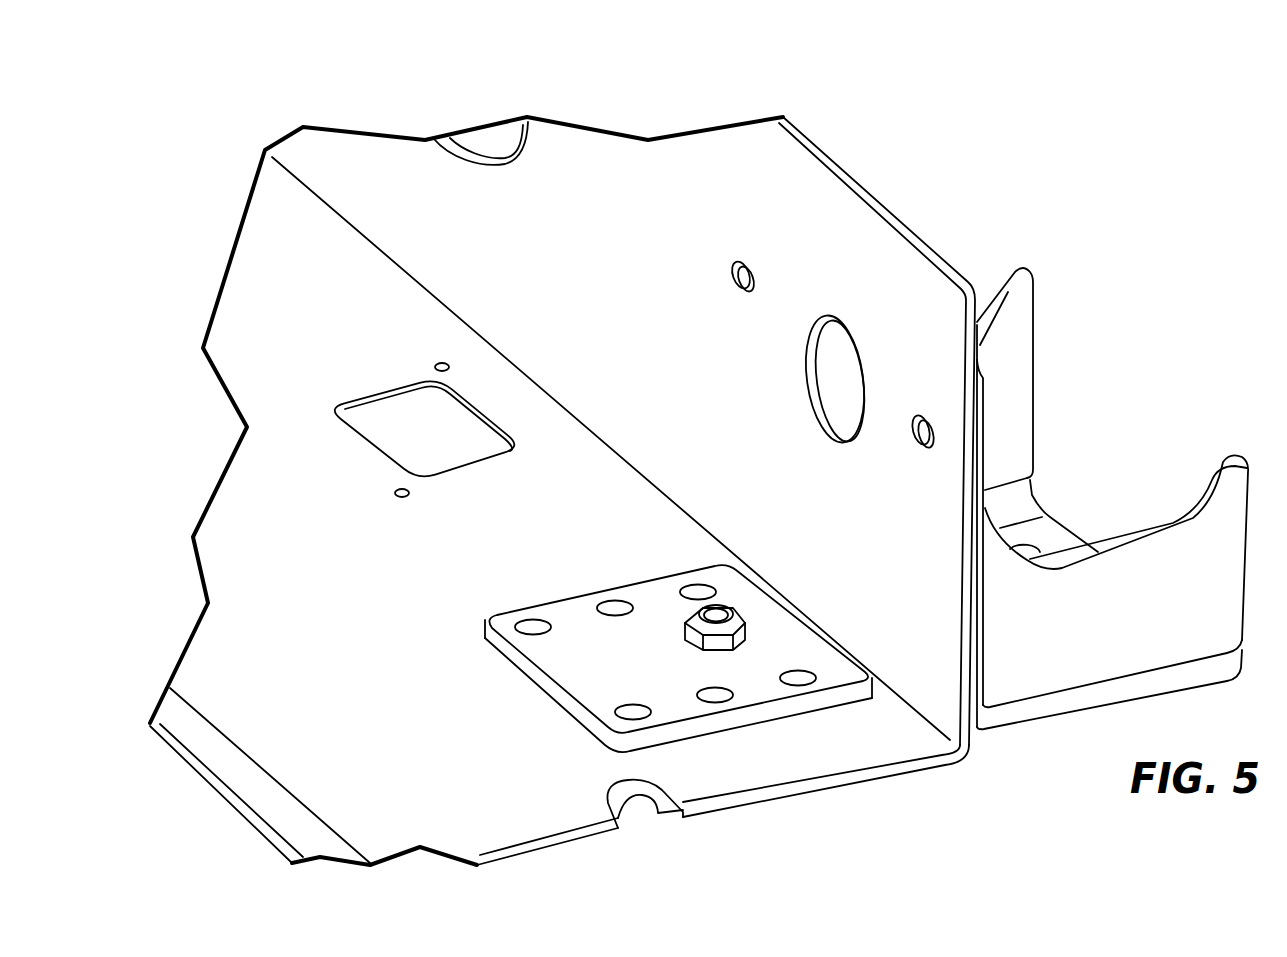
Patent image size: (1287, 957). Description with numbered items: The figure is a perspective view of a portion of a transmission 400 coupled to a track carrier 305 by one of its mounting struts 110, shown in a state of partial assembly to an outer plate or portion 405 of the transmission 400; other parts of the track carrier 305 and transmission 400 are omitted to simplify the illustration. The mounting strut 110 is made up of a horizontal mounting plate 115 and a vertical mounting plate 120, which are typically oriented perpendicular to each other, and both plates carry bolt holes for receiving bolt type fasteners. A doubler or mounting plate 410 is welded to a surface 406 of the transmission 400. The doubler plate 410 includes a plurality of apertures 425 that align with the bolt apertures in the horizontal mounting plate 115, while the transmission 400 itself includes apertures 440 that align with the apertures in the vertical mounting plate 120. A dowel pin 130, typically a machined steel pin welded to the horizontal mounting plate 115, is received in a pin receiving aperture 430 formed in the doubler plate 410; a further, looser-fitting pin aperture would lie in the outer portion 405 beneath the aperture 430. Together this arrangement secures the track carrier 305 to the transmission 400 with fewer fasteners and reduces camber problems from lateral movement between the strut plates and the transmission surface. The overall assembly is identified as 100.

The display mounting assembly 100 is at (1157, 188).
The mounting strut 110 is at (998, 293).
The horizontal mounting plate 115 is at (658, 813).
The vertical mounting plate 120 is at (978, 683).
The dowel pin 130 is at (740, 615).
The track carrier 305 is at (1038, 242).
The transmission 400 is at (825, 190).
The outer plate or portion 405 is at (897, 217).
The surface 406 is at (877, 745).
The doubler plate 410 is at (565, 705).
The apertures 425 is at (540, 633).
The pin receiving aperture 430 is at (687, 635).
The apertures 440 is at (740, 285).